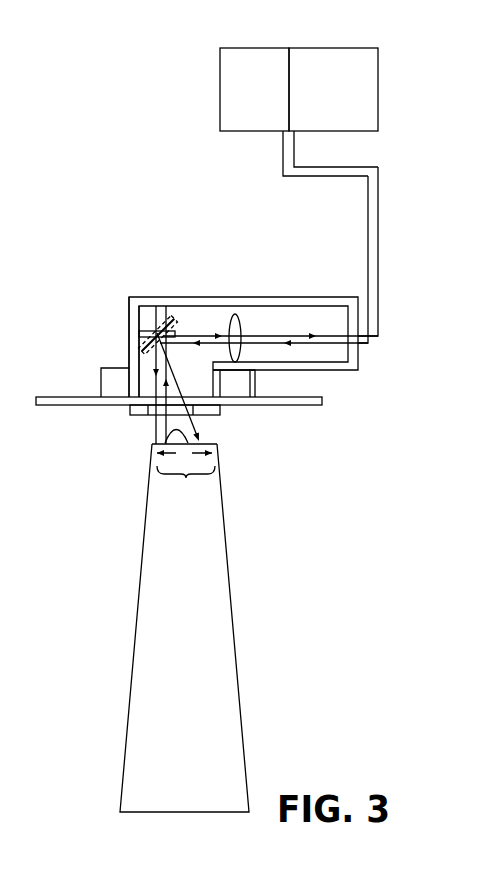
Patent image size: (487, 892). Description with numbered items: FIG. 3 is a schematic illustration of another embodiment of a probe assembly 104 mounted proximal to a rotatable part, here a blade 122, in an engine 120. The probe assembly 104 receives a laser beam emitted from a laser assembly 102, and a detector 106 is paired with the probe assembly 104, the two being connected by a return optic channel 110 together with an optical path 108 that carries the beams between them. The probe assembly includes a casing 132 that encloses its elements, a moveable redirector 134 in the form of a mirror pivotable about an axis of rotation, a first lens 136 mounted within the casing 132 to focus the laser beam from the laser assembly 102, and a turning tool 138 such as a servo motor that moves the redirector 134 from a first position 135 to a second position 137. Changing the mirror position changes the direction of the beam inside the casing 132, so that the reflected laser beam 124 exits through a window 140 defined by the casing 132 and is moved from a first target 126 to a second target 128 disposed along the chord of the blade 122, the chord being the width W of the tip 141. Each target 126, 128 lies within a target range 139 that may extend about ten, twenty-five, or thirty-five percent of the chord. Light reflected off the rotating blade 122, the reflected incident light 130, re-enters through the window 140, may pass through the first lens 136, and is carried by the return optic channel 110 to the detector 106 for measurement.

The laser assembly 102 is at (380, 93).
The detector 106 is at (220, 103).
The return optic channel 110 is at (283, 143).
The optical fiber 108 is at (378, 248).
The casing 132 is at (273, 300).
The probe assembly 104 is at (122, 286).
The redirector 134 is at (103, 343).
The second position 137 is at (142, 350).
The first position 135 is at (160, 333).
The turning tool 138 is at (157, 320).
The reflected laser beam 124 is at (156, 372).
The reflected incident light 130 is at (166, 387).
The second target 128 is at (205, 437).
The first lens 136 is at (243, 352).
The engine 120 is at (297, 408).
The tip 141 is at (160, 432).
The window 140 is at (160, 423).
The first target 126 is at (152, 466).
The target range 139 is at (178, 492).
The blade 122 is at (238, 682).